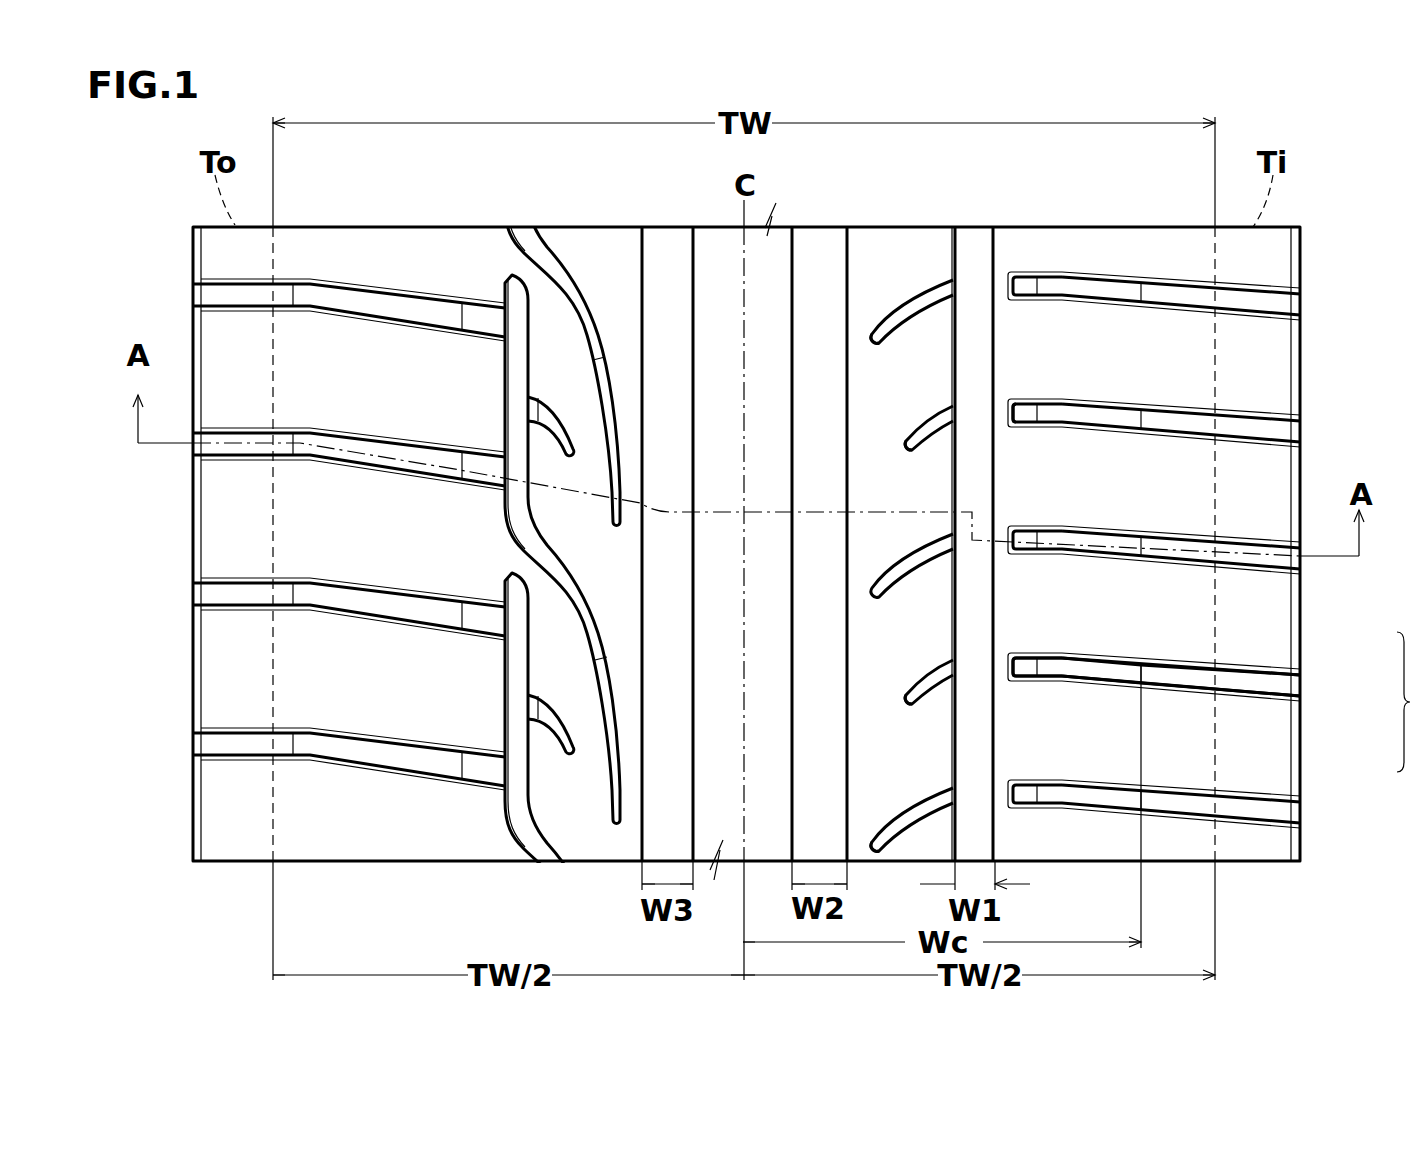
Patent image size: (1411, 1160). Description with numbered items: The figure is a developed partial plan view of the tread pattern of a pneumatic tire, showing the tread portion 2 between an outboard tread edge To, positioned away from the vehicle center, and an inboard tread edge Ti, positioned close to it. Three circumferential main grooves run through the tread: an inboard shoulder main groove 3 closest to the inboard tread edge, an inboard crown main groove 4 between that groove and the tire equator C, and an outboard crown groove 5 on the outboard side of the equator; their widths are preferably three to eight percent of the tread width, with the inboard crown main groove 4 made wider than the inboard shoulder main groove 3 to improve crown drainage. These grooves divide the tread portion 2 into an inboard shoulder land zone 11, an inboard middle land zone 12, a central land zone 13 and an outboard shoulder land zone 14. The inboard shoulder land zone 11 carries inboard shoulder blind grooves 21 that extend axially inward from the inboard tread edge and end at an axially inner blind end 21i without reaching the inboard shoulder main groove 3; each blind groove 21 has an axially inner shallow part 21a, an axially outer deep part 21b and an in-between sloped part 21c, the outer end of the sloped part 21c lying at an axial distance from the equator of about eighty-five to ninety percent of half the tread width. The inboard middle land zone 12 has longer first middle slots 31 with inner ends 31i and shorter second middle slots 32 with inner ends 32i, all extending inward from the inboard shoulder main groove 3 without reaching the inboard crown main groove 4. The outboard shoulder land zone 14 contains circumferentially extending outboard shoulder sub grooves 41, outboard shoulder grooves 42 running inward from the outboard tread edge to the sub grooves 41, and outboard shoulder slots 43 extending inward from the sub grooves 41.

The tread portion 2 is at (1140, 207).
The inboard shoulder main groove 3 is at (972, 258).
The inboard crown main groove 4 is at (817, 268).
The outboard crown groove 5 is at (668, 277).
The inboard shoulder land zone 11 is at (1060, 258).
The inboard middle land zone 12 is at (897, 262).
The central land zone 13 is at (718, 268).
The outboard shoulder land zone 14 is at (605, 570).
The inboard shoulder blind groove 21 is at (1098, 417).
The axially inner shallow part 21a is at (1025, 663).
The axially outer deep part 21b is at (1202, 677).
The sloped part 21c is at (1092, 668).
The axially inner blind end 21i is at (1008, 415).
The first middle slot 31 is at (907, 817).
The inner end of first middle slot 31i is at (866, 849).
The second middle slot 32 is at (915, 687).
The inner end of second middle slot 32i is at (897, 697).
The outboard shoulder sub groove 41 is at (515, 298).
The outboard shoulder groove 42 is at (400, 305).
The outboard shoulder slot 43 is at (565, 735).